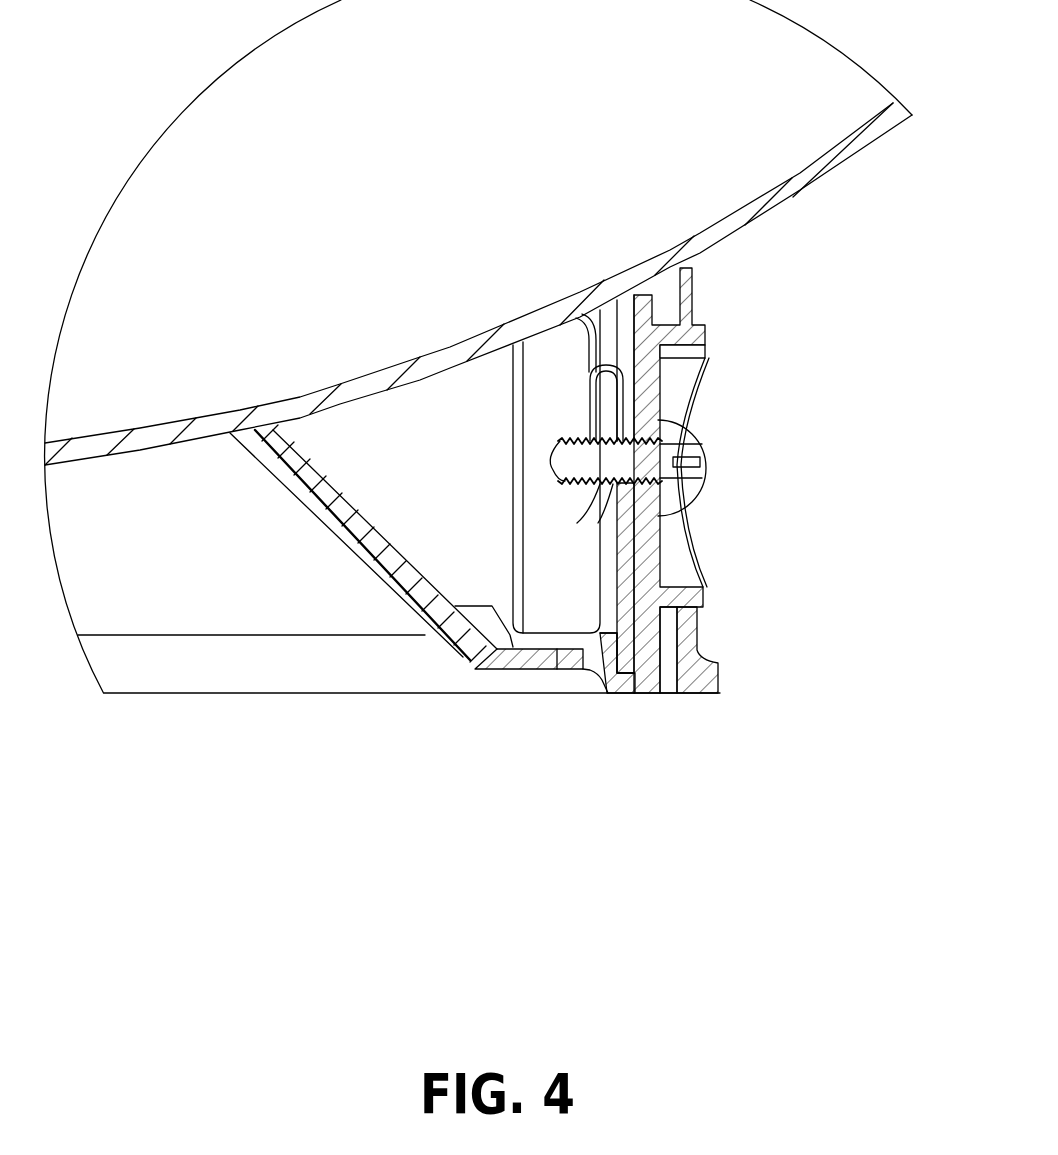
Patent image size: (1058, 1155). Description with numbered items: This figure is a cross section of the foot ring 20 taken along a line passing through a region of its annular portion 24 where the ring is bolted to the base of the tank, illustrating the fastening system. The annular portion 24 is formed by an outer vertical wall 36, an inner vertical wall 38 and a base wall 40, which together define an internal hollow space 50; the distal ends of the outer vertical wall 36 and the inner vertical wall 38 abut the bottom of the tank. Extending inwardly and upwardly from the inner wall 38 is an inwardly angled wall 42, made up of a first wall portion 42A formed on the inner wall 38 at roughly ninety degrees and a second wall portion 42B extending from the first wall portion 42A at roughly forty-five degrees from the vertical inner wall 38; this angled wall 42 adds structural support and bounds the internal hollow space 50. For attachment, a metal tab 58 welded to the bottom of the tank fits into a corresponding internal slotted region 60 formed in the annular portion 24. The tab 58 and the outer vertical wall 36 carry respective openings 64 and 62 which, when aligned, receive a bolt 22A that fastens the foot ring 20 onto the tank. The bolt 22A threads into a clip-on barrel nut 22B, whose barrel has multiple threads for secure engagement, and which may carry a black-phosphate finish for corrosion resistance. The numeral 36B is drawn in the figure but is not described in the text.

The foot ring 20 is at (747, 401).
The bolt 22A is at (676, 472).
The clip-on barrel nut 22B is at (567, 437).
The annular portion 24 is at (647, 597).
The outer vertical wall 36 is at (660, 562).
The bracket flange 36B is at (690, 376).
The inner vertical wall 38 is at (590, 606).
The base wall 40 is at (630, 680).
The inwardly angled wall 42 is at (385, 607).
The first wall portion 42A is at (511, 655).
The second wall portion 42B is at (302, 528).
The internal hollow space 50 is at (455, 477).
The tab 58 is at (647, 540).
The internal slotted region 60 is at (625, 340).
The opening 62 is at (660, 434).
The opening 64 is at (660, 510).